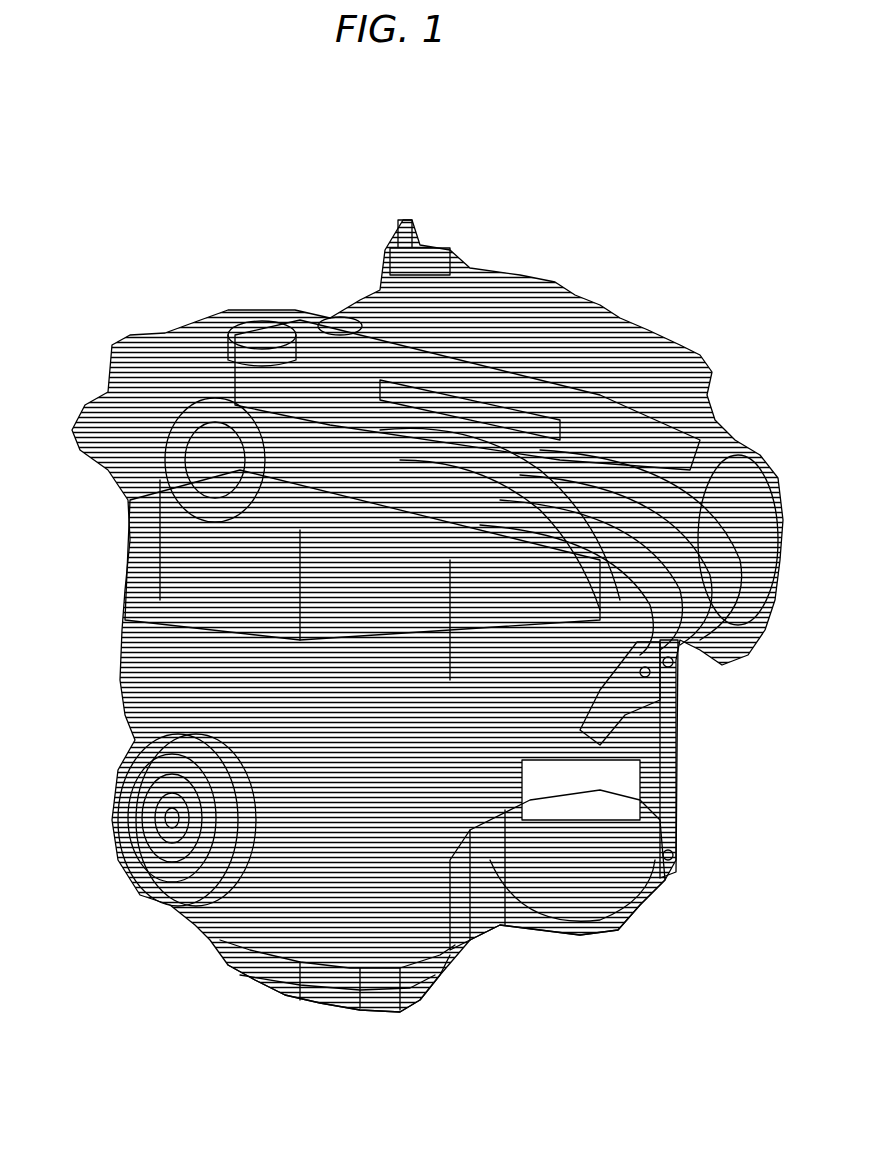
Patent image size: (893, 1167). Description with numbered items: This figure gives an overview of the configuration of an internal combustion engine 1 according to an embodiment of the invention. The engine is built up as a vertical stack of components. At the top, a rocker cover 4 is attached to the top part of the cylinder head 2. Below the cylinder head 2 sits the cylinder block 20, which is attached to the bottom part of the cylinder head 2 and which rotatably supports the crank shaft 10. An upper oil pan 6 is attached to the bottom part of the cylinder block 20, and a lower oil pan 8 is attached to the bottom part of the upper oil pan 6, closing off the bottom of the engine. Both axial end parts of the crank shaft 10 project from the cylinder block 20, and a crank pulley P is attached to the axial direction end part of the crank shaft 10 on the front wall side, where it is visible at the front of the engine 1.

The internal combustion engine 1 is at (522, 229).
The cylinder head 2 is at (300, 602).
The rocker cover 4 is at (352, 320).
The upper oil pan 6 is at (495, 870).
The lower oil pan 8 is at (385, 1002).
The crank shaft 10 is at (187, 820).
The cylinder block 20 is at (560, 680).
The crank pulley P is at (125, 782).